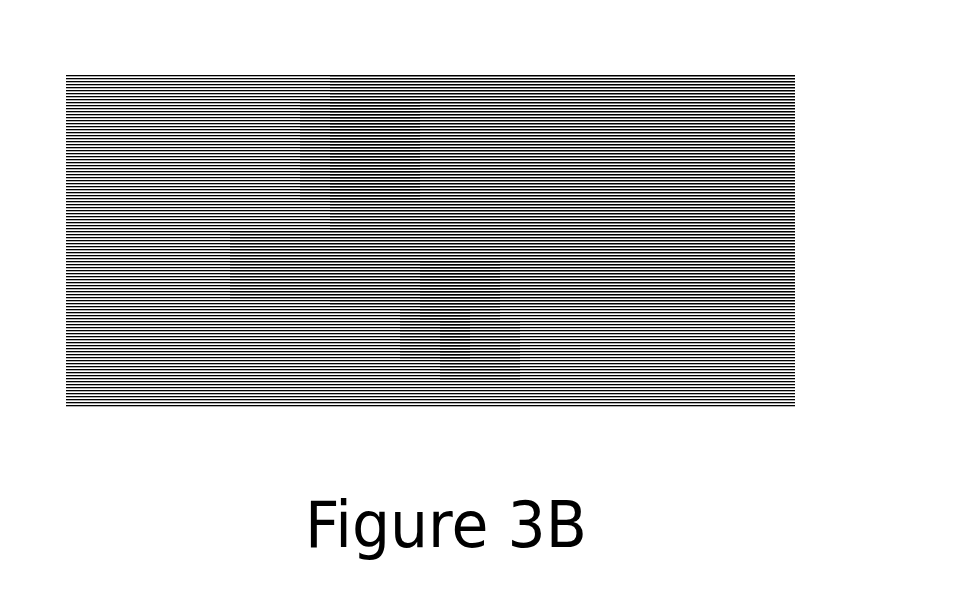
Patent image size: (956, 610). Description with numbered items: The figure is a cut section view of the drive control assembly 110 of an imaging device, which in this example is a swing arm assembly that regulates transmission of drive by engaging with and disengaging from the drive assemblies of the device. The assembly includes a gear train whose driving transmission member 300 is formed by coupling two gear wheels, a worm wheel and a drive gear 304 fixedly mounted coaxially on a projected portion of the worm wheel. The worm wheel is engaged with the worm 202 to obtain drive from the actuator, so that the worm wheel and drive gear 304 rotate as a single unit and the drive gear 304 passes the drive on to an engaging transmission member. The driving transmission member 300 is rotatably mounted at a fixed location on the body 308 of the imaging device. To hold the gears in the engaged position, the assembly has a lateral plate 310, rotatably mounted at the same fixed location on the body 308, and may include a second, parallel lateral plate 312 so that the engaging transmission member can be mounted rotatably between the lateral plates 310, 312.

The drive control assembly 110 is at (355, 68).
The driving transmission member 300 is at (318, 134).
The drive gear 304 is at (365, 140).
The body 308 is at (273, 262).
The lateral plate 310 is at (460, 292).
The lateral plate 312 is at (433, 338).
The worm 202 is at (475, 347).